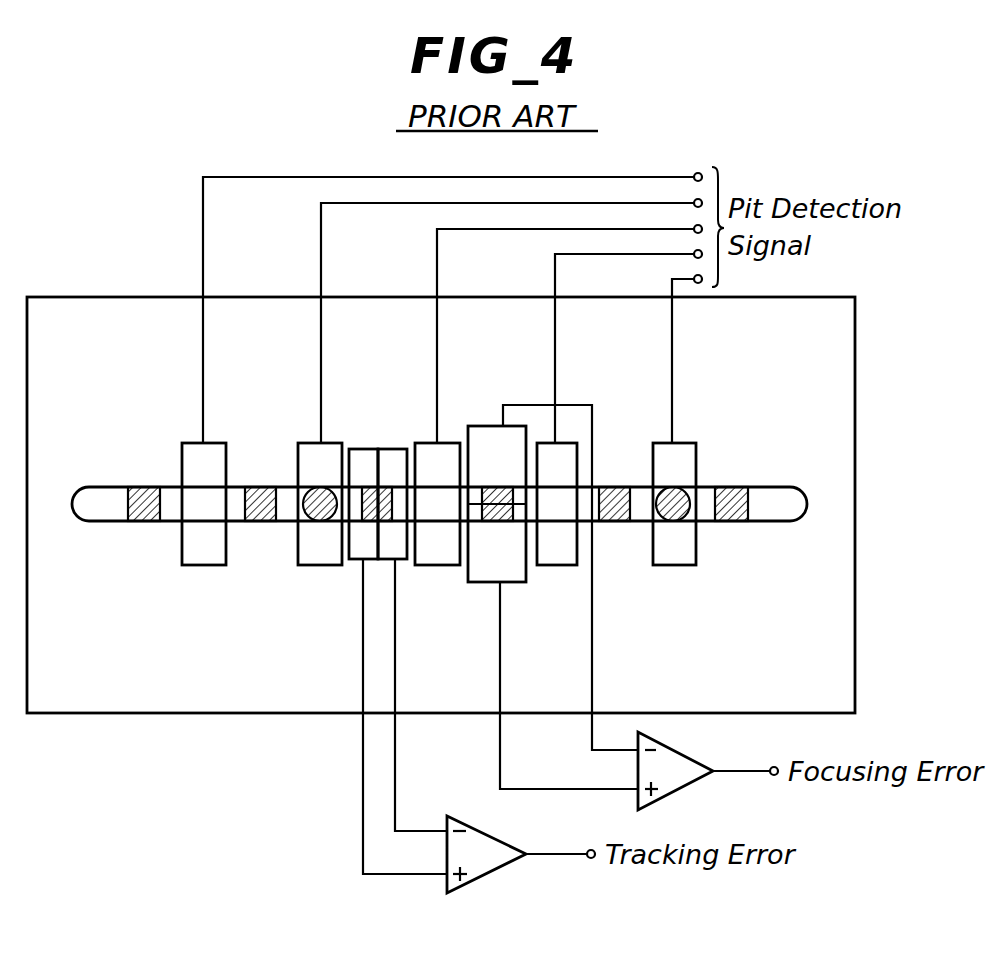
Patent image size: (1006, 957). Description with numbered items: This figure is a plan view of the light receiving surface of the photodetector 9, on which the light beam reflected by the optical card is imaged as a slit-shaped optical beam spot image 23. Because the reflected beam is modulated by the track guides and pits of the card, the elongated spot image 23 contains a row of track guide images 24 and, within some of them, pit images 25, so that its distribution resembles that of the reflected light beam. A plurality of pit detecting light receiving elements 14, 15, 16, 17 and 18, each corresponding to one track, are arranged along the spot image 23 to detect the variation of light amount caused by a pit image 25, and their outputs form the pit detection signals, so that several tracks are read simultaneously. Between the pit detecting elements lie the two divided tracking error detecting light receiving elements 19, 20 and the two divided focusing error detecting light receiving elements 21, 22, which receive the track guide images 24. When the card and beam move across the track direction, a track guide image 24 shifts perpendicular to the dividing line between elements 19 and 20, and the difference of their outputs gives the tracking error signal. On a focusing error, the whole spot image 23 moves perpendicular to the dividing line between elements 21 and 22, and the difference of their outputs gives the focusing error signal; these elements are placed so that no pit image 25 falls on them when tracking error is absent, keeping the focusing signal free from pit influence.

The photodetector 9 is at (75, 297).
The pit detecting light receiving element 14 is at (205, 565).
The pit detecting light receiving element 15 is at (320, 565).
The pit detecting light receiving element 16 is at (432, 565).
The pit detecting light receiving element 17 is at (558, 565).
The pit detecting light receiving element 18 is at (696, 553).
The tracking error detecting light receiving element 19 is at (362, 449).
The tracking error detecting light receiving element 20 is at (393, 449).
The focusing error detecting light receiving element 21 is at (490, 426).
The focusing error detecting light receiving element 22 is at (480, 582).
The optical beam spot image 23 is at (165, 487).
The track guide image 24 is at (142, 521).
The pit image 25 is at (313, 518).